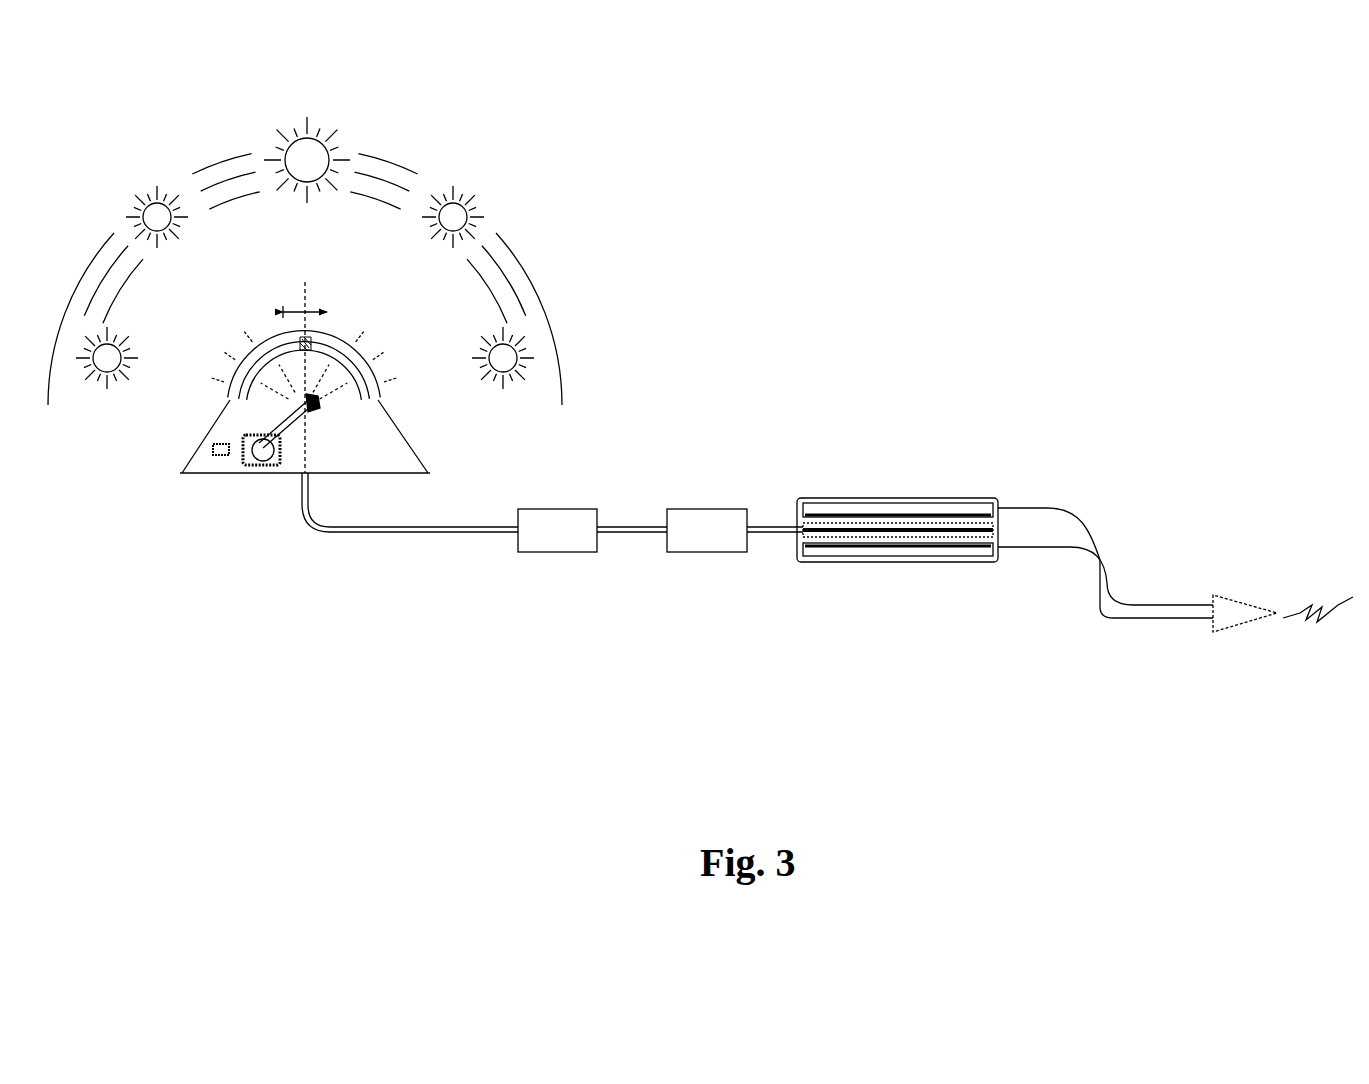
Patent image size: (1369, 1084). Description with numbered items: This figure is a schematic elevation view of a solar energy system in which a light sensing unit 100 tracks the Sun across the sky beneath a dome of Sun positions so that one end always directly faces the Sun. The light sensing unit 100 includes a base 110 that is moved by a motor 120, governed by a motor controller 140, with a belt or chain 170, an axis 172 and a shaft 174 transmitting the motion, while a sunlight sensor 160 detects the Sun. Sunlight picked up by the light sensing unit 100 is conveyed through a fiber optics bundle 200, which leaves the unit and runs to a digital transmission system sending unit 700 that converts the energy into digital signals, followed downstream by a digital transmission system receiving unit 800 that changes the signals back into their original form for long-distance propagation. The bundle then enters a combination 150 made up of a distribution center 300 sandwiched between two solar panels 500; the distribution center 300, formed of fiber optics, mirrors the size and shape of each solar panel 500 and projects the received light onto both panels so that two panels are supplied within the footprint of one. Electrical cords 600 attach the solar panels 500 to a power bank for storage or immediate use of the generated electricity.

The light sensing unit 100 is at (303, 297).
The base 110 is at (240, 352).
The motor 120 is at (247, 466).
The motor controller 140 is at (211, 452).
The combination 150 is at (807, 497).
The sunlight sensor 160 is at (280, 306).
The belt or chain 170 is at (265, 432).
The axis 172 is at (308, 342).
The shaft 174 is at (313, 410).
The fiber optics bundle 200 is at (375, 534).
The distribution center 300 is at (938, 527).
The solar panel 500 is at (843, 548).
The electrical cord 600 is at (1089, 556).
The digital transmission system sending unit 700 is at (543, 554).
The digital transmission system receiving unit 800 is at (686, 554).